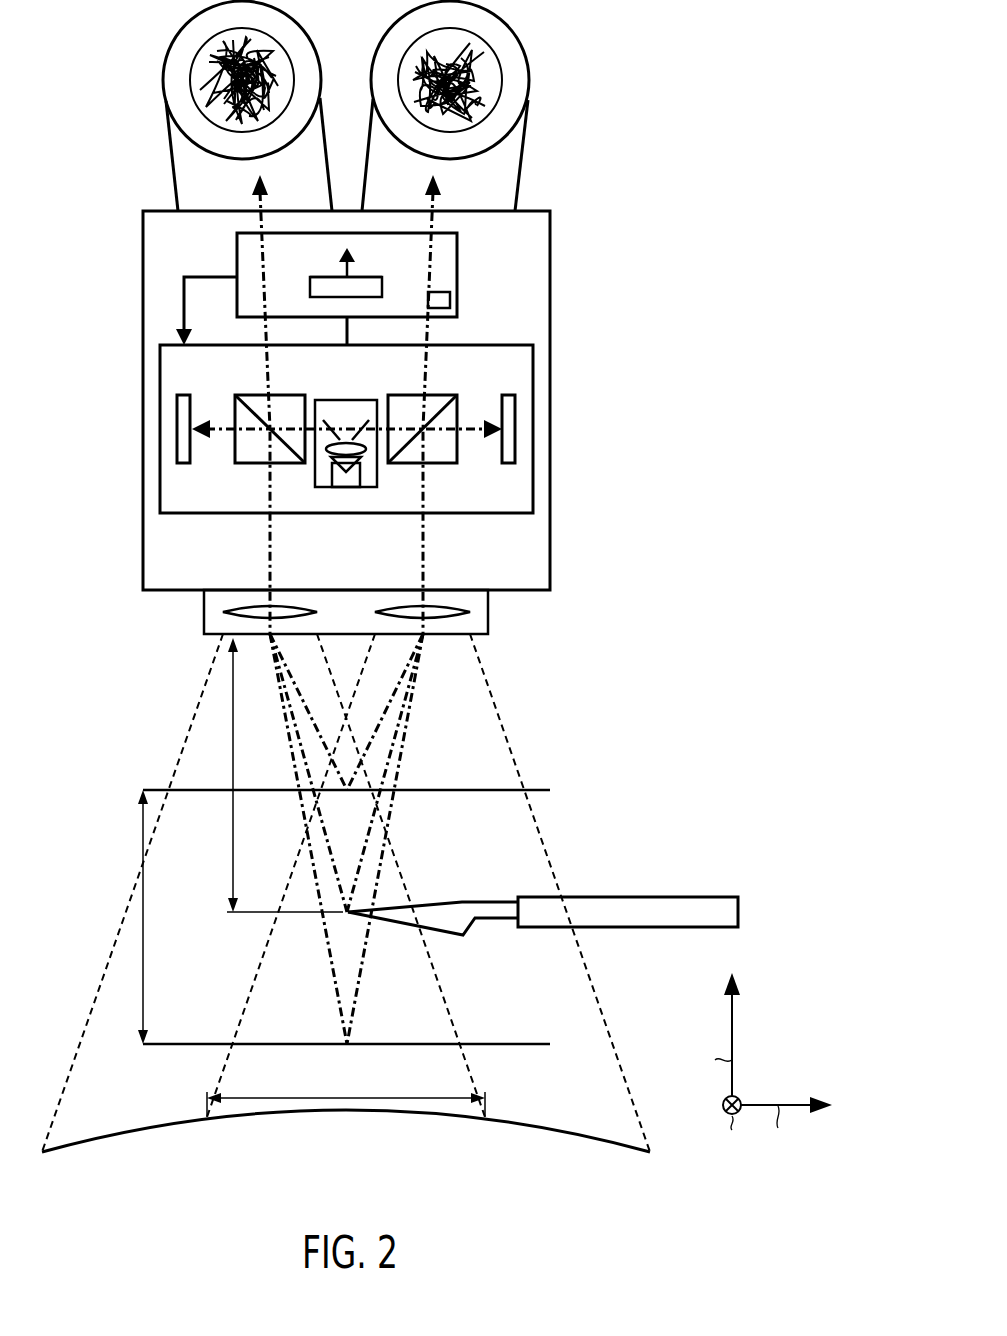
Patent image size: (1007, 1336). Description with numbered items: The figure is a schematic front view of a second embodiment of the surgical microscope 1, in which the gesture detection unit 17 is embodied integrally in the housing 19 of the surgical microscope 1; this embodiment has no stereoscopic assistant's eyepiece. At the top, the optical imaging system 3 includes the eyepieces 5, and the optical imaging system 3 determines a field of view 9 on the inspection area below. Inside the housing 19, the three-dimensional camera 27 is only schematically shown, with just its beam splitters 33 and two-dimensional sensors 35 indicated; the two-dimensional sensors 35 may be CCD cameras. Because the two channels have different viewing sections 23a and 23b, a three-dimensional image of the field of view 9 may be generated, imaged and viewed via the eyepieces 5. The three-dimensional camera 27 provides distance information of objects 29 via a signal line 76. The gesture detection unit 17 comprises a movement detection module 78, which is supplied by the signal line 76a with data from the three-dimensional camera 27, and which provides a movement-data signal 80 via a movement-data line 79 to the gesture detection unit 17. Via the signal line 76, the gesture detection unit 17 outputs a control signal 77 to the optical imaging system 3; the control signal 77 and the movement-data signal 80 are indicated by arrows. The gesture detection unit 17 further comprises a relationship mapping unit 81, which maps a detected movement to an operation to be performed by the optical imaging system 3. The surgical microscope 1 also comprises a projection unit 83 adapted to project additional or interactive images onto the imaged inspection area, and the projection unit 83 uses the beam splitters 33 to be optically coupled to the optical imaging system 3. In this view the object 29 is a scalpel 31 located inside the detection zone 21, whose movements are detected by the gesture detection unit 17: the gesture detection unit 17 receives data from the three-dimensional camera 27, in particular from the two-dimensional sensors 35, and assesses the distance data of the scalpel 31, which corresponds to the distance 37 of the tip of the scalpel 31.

The surgical microscope 1 is at (678, 111).
The optical imaging system 3 is at (160, 514).
The eyepieces 5 is at (515, 150).
The field of view 9 is at (345, 1113).
The gesture detection unit 17 is at (237, 300).
The housing 19 is at (550, 449).
The detection zone 21 is at (143, 945).
The viewing section 23a is at (200, 688).
The viewing section 23b is at (505, 703).
The 3D-camera 27 is at (533, 345).
The object 29 is at (640, 907).
The scalpel 31 is at (433, 918).
The beam splitters 33 is at (240, 395).
The 2D-sensors 35 is at (180, 405).
The distance 37 is at (228, 838).
The signal line 76 is at (184, 276).
The signal line 76a is at (337, 345).
The control signal 77 is at (178, 333).
The movement detection module 78 is at (383, 288).
The movement-data line 79 is at (350, 243).
The movement-data signal 80 is at (325, 269).
The relationship mapping unit 81 is at (450, 300).
The projection unit 83 is at (368, 489).